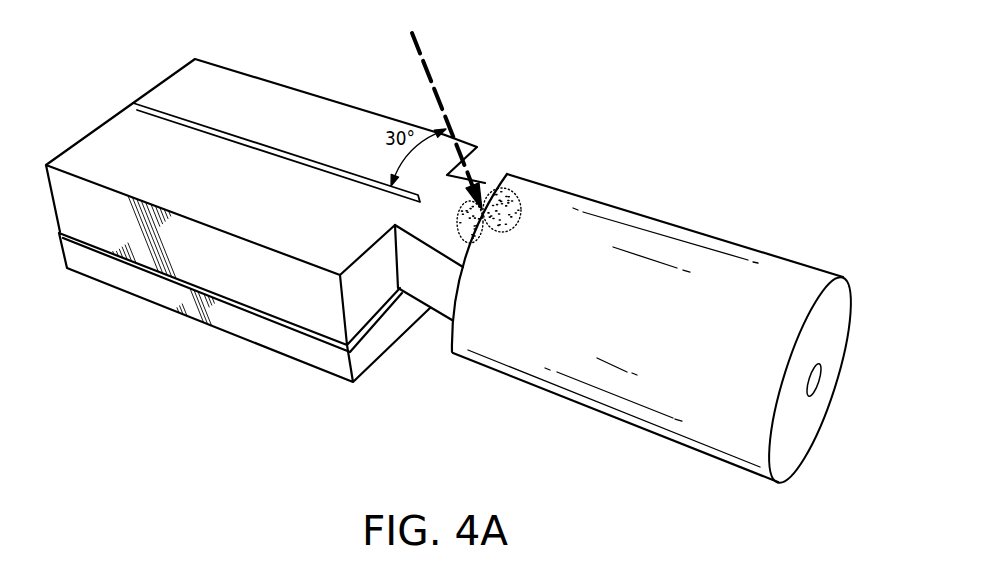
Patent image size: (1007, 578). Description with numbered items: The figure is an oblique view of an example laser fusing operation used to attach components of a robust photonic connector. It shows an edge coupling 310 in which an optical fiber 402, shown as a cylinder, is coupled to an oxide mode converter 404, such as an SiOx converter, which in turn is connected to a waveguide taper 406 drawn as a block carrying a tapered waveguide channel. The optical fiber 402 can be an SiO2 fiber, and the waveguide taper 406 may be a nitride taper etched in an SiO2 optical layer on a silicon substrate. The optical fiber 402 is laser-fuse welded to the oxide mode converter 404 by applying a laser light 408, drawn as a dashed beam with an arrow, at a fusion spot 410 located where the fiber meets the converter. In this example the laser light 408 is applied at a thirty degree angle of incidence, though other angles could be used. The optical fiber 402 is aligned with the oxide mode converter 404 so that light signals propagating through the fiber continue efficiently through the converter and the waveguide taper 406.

The edge coupling 310 is at (608, 68).
The optical fiber 402 is at (677, 224).
The oxide mode converter 404 is at (440, 300).
The waveguide taper 406 is at (167, 110).
The laser light 408 is at (440, 98).
The fusion spot 410 is at (512, 230).